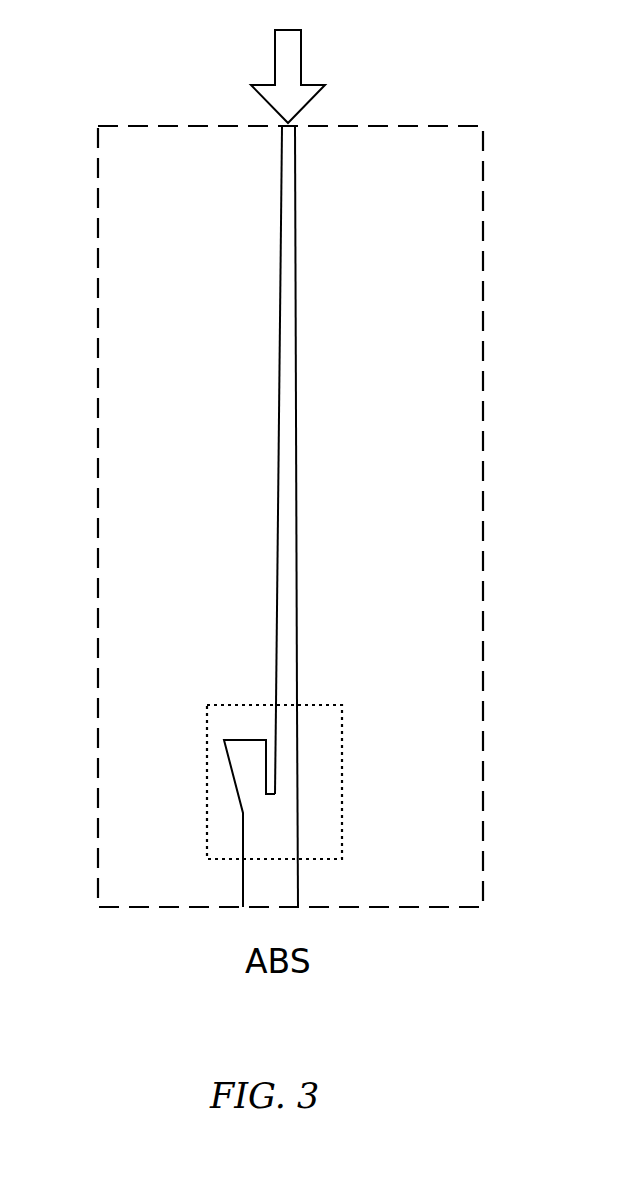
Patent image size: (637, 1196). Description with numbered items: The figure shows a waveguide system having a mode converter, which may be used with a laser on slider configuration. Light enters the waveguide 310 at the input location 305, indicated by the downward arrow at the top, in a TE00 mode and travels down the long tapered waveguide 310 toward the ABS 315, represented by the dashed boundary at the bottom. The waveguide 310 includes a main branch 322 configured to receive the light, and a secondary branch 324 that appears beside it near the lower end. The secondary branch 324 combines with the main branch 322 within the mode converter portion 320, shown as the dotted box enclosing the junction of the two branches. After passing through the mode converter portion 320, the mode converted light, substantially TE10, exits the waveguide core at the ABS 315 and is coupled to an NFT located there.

The input location 305 is at (287, 126).
The waveguide 310 is at (288, 348).
The ABS 315 is at (141, 910).
The mode converter portion 320 is at (241, 704).
The main branch 322 is at (288, 778).
The secondary branch 324 is at (244, 765).